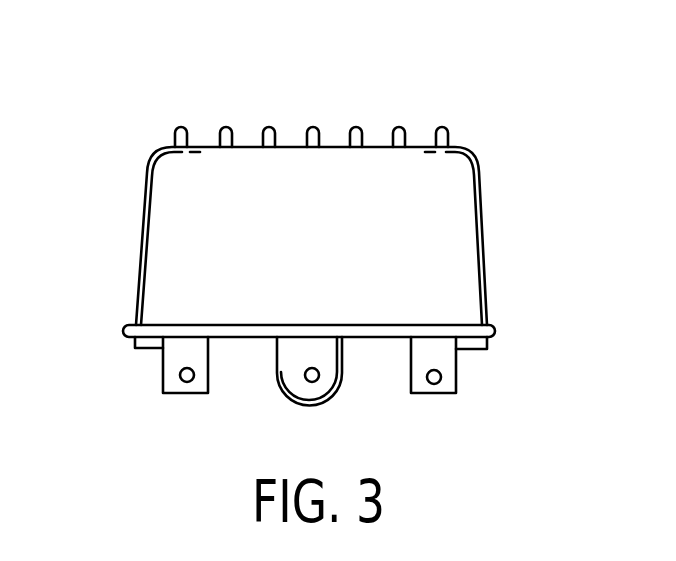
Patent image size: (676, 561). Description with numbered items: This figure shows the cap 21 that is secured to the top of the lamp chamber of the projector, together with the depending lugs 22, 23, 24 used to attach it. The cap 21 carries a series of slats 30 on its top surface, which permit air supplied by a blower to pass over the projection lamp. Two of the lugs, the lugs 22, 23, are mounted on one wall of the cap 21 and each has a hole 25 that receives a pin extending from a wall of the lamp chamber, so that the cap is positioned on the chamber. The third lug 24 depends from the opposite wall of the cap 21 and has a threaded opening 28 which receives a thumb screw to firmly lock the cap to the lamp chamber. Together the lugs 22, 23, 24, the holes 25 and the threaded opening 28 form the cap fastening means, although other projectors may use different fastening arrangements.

The cap 21 is at (140, 250).
The slats 30 is at (264, 130).
The lug 22 is at (163, 372).
The lug 23 is at (454, 379).
The lug 24 is at (294, 390).
The threaded opening 28 is at (317, 382).
The holes 25 is at (187, 383).